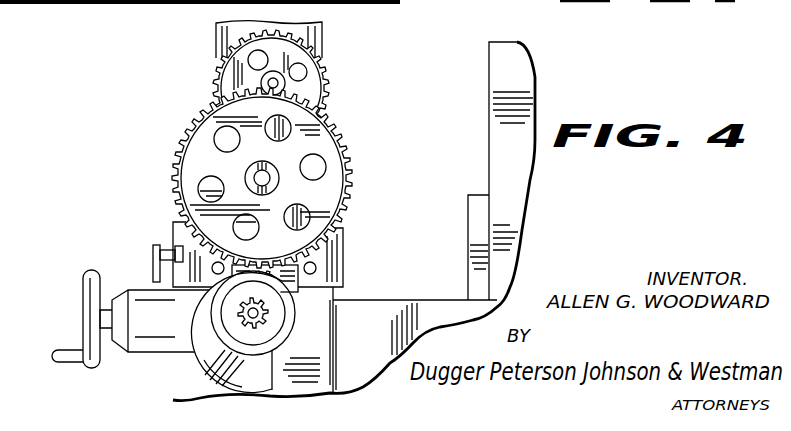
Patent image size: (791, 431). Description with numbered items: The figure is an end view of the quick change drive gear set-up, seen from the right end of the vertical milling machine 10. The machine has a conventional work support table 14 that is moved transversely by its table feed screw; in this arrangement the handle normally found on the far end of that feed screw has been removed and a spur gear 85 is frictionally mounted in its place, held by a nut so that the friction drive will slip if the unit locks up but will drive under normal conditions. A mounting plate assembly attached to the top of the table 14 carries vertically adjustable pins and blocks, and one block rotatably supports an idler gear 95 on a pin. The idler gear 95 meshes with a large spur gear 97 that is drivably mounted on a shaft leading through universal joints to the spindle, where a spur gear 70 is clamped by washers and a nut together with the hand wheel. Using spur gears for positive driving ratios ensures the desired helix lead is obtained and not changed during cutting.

The vertical milling machine 10 is at (475, 93).
The work support table 14 is at (338, 243).
The spur gear 70 is at (312, 89).
The spur gear 85 is at (240, 313).
The idler gear 95 is at (300, 286).
The large spur gear 97 is at (330, 157).